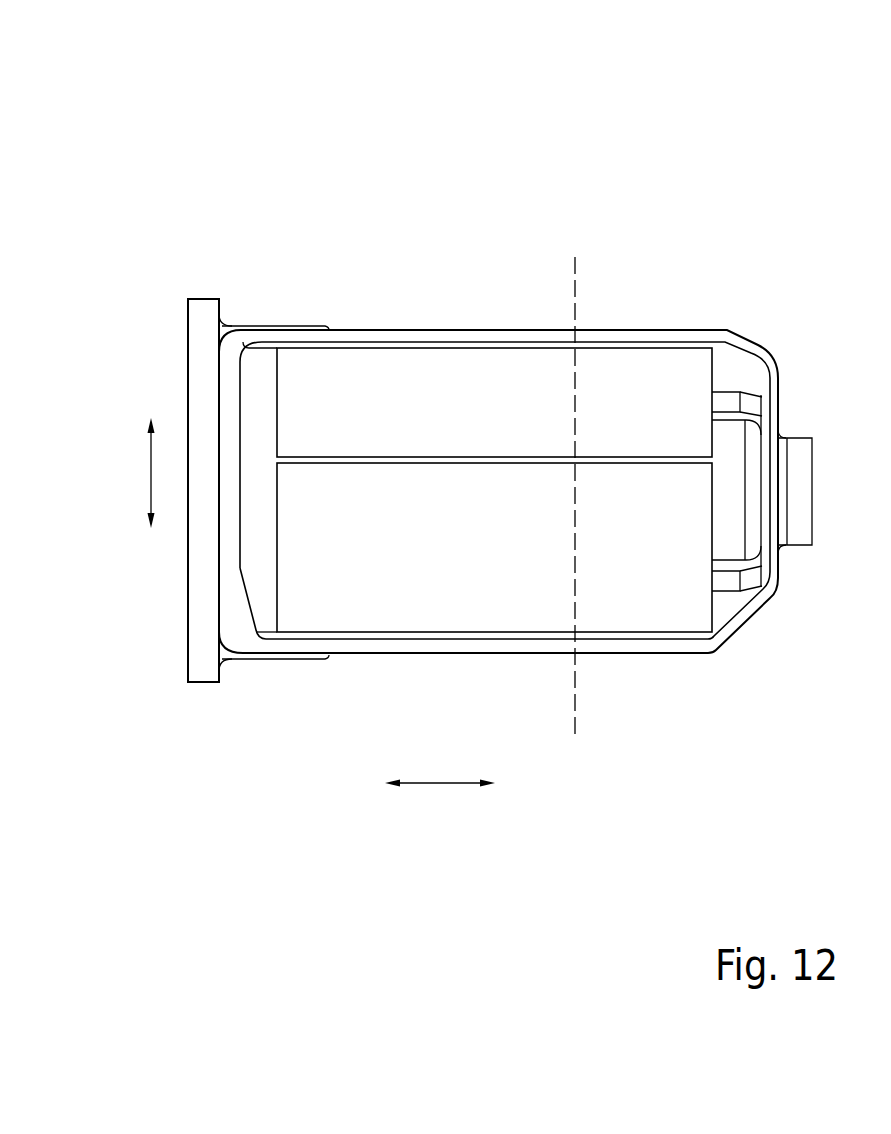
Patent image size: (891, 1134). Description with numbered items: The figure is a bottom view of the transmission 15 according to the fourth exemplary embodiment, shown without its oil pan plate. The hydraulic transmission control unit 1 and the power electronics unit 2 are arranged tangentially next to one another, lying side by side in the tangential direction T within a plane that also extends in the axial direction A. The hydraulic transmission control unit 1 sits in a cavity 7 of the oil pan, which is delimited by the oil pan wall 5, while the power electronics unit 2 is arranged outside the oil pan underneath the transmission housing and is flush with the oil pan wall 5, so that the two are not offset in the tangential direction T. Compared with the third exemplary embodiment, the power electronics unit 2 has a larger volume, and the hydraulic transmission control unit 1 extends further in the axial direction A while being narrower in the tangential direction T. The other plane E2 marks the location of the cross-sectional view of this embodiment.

The transmission 15 is at (242, 217).
The oil pan wall 5 is at (512, 645).
The power electronics unit 2 is at (378, 372).
The hydraulic transmission control unit 1 is at (346, 595).
The cavity 7 is at (722, 602).
The plane E2 is at (573, 290).
The tangential direction T is at (136, 473).
The axial direction A is at (440, 761).